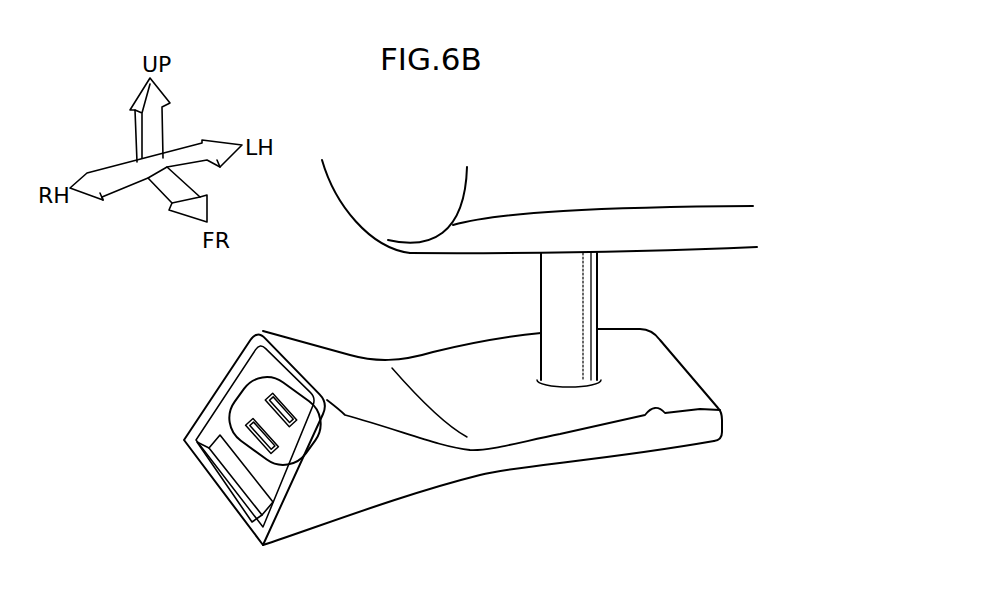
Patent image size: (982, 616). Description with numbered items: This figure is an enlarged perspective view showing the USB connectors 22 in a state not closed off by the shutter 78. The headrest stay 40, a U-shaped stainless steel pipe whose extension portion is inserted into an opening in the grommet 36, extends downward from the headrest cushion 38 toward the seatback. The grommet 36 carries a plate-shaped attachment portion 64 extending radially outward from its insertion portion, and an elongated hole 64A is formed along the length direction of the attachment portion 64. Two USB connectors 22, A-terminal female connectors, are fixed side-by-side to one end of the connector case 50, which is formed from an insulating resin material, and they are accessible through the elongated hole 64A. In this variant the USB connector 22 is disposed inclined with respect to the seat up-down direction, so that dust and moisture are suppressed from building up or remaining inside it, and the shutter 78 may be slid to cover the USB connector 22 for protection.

The seat cushion 38 is at (728, 247).
The headrest stay 40 is at (672, 320).
The grommet 36 is at (717, 395).
The attachment portion 64 is at (660, 413).
The elongated hole 64A is at (247, 375).
The connector case 50 is at (243, 407).
The USB connector 22 is at (298, 423).
The shutter 78 is at (228, 468).